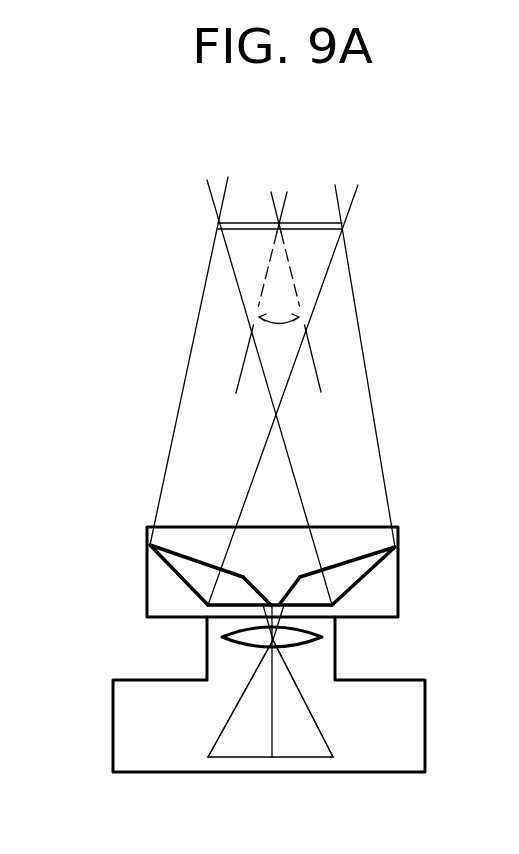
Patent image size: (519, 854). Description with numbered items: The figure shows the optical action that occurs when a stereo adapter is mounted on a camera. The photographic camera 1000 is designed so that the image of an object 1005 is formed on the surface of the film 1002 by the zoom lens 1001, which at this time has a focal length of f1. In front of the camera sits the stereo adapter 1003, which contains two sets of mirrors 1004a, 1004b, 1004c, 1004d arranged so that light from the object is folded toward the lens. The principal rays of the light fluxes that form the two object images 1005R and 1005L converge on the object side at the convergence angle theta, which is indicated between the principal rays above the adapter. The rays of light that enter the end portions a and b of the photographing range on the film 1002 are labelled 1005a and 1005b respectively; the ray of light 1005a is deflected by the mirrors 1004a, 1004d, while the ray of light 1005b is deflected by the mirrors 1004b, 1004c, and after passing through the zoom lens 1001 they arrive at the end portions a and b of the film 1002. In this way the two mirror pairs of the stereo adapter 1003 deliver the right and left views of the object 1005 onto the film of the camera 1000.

The photographic camera 1000 is at (113, 712).
The zoom lens 1001 is at (228, 633).
The film 1002 is at (255, 757).
The stereo adapter 1003 is at (398, 595).
The mirror 1004a is at (170, 554).
The mirror 1004b is at (245, 578).
The mirror 1004c is at (297, 577).
The mirror 1004d is at (385, 552).
The object 1005 is at (313, 223).
The ray of light 1005a is at (292, 675).
The ray of light 1005b is at (252, 675).
The object image 1005R is at (238, 757).
The object image 1005L is at (297, 757).